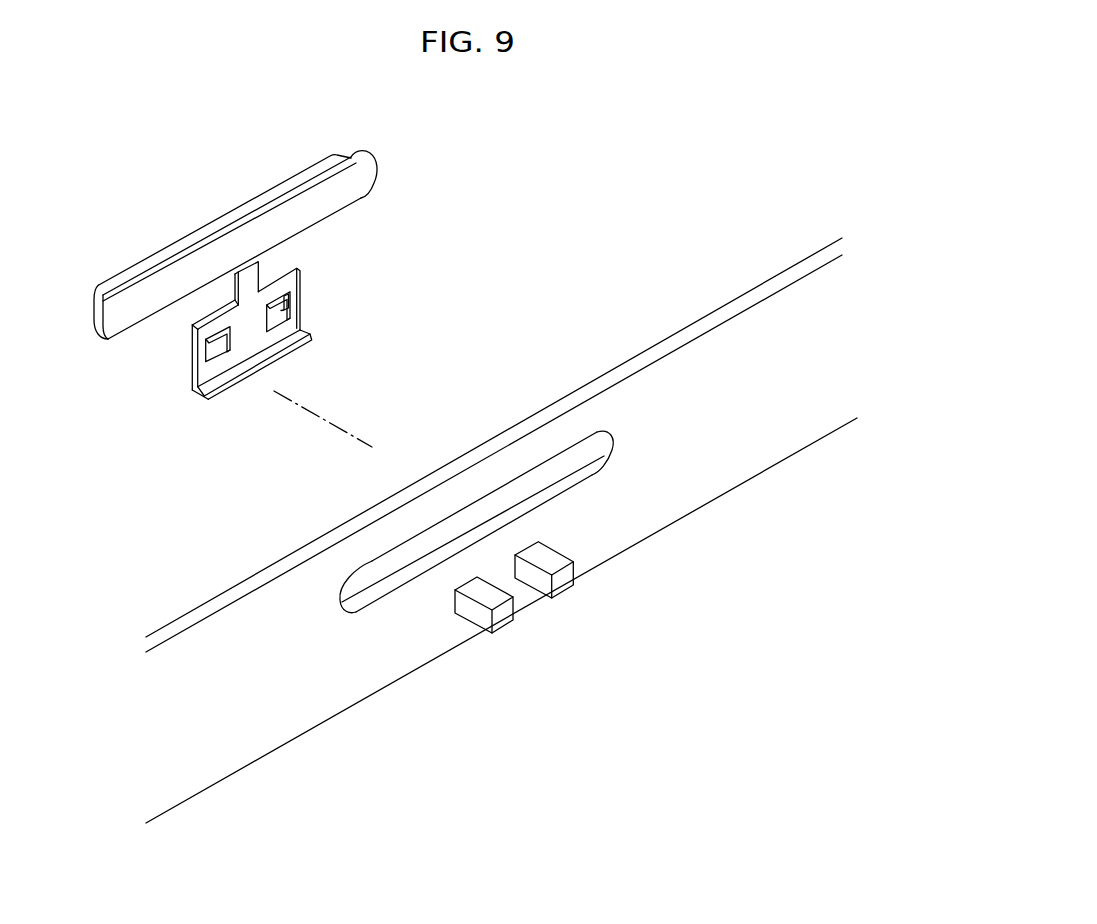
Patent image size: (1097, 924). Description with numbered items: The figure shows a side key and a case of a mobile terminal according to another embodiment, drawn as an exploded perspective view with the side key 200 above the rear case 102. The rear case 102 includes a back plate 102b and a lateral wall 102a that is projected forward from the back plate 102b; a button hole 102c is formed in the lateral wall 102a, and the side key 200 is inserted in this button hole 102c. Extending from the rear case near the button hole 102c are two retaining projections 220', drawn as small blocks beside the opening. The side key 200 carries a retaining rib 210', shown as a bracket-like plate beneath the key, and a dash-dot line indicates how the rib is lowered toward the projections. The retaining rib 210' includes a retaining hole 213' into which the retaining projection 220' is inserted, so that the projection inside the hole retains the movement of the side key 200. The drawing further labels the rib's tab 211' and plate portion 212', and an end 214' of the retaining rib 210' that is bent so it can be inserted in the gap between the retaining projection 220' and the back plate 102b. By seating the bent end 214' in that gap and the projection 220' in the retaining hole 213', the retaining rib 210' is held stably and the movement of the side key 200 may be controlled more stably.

The side key 200 is at (351, 152).
The retaining rib 210' is at (319, 330).
The tab portion 211' is at (309, 253).
The plate body with opening 212' is at (326, 287).
The retaining hole 213' is at (333, 290).
The end of the retaining rib 214' is at (288, 353).
The rear case 102 is at (501, 476).
The lateral wall 102a is at (652, 398).
The back plate 102b is at (795, 495).
The button hole 102c is at (476, 516).
The retaining projection 220' is at (584, 587).